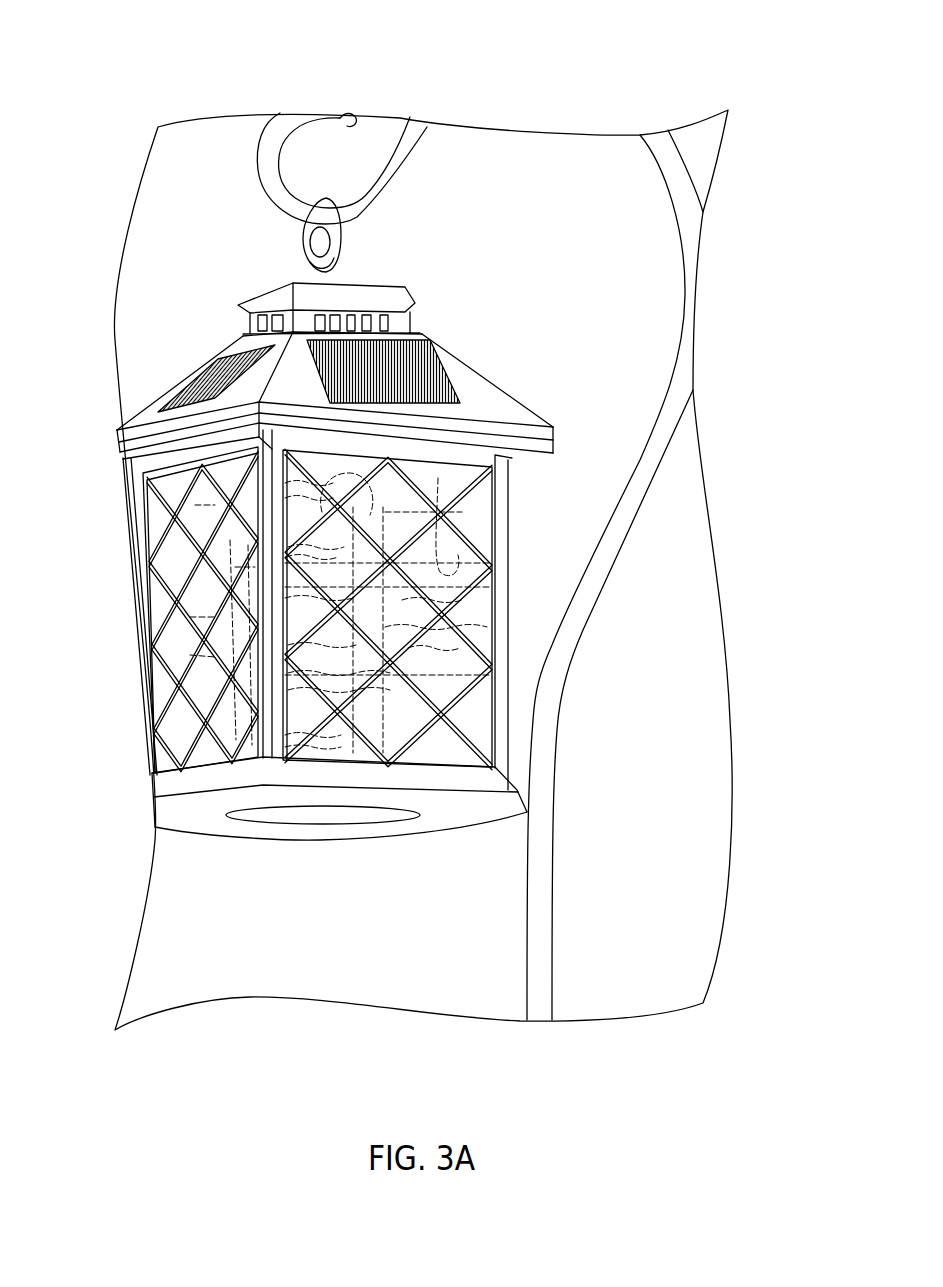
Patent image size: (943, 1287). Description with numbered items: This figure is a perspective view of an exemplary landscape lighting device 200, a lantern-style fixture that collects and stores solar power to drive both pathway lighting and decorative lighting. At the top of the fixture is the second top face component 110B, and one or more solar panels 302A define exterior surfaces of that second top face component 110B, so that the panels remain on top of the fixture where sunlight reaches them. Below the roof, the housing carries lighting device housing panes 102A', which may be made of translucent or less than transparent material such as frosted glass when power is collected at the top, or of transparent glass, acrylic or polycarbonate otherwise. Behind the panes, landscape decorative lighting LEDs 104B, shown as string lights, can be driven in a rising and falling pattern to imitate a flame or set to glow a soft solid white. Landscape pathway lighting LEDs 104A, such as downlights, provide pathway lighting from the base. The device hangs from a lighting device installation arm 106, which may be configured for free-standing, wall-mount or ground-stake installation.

The landscape lighting device 200 is at (152, 86).
The second top face component 110B is at (437, 335).
The solar panel 302A is at (462, 384).
The landscape decorative lighting LEDs 104B is at (172, 541).
The lighting device housing panes 102A' is at (293, 772).
The landscape pathway lighting LEDs 104A is at (313, 828).
The lighting device installation arm 106 is at (598, 645).